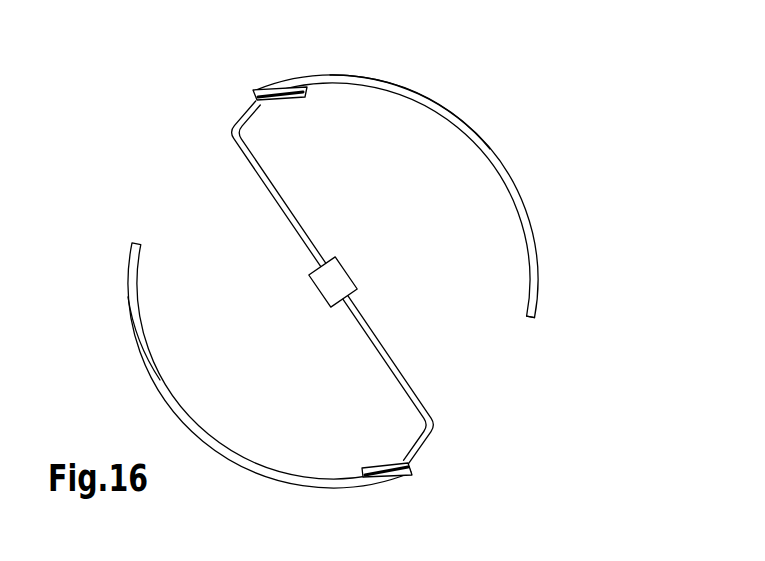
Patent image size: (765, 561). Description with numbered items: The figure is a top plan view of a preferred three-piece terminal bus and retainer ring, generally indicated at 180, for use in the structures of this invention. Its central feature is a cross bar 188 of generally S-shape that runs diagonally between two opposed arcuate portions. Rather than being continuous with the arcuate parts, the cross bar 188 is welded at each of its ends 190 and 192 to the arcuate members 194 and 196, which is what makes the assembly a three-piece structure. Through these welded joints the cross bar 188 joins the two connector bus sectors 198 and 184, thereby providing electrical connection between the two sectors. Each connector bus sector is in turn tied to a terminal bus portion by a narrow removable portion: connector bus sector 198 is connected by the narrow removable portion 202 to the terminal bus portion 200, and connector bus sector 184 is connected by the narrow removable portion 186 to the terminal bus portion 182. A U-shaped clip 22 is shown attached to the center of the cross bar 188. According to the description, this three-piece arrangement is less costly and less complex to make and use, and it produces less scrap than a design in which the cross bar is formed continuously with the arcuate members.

The U-shaped clip 22 is at (354, 263).
The three-piece terminal bus and retainer ring 180 is at (522, 191).
The terminal bus portion 182 is at (537, 275).
The connector bus sector 184 is at (415, 90).
The narrow removable portion 186 is at (490, 156).
The cross bar 188 is at (367, 318).
The end of cross bar 190 is at (295, 98).
The end of cross bar 192 is at (377, 463).
The arcuate member 194 is at (256, 87).
The arcuate member 196 is at (398, 480).
The connector bus sector 198 is at (317, 487).
The terminal bus portion 200 is at (133, 333).
The narrow removable portion 202 is at (168, 396).